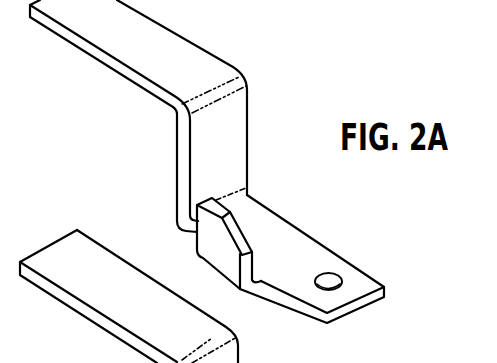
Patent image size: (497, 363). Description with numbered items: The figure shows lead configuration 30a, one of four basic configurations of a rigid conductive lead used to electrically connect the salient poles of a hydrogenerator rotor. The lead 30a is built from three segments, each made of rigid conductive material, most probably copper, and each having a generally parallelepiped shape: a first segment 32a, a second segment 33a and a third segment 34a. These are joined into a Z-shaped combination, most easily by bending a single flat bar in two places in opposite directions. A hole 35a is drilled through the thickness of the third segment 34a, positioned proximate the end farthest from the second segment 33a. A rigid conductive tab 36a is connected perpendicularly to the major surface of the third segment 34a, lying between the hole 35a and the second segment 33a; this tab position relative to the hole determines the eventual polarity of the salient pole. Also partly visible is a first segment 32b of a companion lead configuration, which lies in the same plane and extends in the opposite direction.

The lead configuration 30a is at (49, 90).
The first segment 32a is at (172, 42).
The first segment 32b is at (62, 278).
The second segment 33a is at (177, 153).
The third segment 34a is at (287, 227).
The hole 35a is at (337, 288).
The conductive tab 36a is at (222, 255).